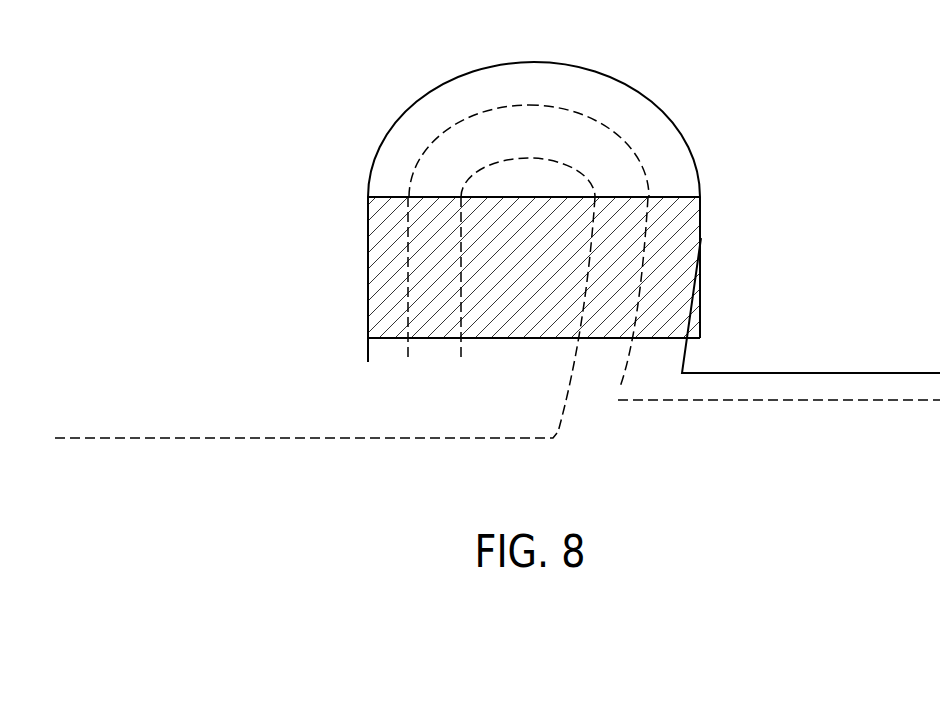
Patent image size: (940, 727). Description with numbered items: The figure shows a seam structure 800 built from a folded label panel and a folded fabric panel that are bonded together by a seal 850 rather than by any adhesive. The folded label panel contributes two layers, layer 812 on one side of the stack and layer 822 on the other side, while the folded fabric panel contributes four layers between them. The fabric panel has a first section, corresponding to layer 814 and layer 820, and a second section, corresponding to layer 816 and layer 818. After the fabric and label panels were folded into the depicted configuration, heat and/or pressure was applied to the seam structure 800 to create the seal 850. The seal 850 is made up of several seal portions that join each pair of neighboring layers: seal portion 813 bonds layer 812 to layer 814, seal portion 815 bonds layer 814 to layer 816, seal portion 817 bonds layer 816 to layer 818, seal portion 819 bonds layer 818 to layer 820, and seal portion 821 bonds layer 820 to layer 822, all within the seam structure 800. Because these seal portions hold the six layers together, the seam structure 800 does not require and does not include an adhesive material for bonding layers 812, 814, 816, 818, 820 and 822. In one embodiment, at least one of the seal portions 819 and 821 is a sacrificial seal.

The seam structure 800 is at (228, 103).
The layer 812 is at (368, 353).
The seal portion 813 is at (387, 234).
The layer 814 is at (408, 353).
The seal portion 815 is at (438, 212).
The layer 816 is at (461, 347).
The seal portion 817 is at (533, 217).
The layer 818 is at (558, 432).
The seal portion 819 is at (613, 220).
The layer 820 is at (620, 387).
The seal portion 821 is at (687, 233).
The layer 822 is at (684, 366).
The seal 850 is at (727, 286).